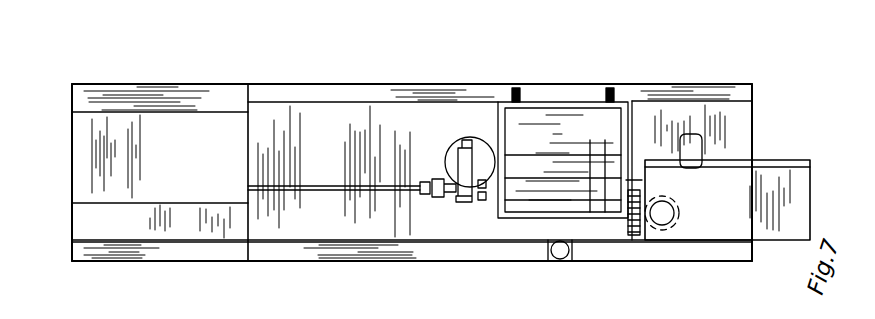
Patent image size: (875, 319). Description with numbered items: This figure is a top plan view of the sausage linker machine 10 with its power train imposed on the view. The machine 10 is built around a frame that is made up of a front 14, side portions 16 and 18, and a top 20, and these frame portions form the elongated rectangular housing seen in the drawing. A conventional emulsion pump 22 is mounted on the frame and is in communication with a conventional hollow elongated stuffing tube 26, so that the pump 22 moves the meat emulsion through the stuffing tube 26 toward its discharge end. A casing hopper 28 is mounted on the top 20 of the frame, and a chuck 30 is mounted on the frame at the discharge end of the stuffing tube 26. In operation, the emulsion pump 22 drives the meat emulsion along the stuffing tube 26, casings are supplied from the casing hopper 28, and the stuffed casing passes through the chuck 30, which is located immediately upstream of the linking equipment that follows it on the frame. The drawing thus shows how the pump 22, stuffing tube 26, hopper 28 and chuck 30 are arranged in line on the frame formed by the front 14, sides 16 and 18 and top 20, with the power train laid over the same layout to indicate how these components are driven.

The sausage linker machine 10 is at (340, 78).
The front 14 is at (332, 262).
The frame portion 16 is at (72, 97).
The frame portion 18 is at (754, 118).
The top 20 is at (143, 106).
The emulsion pump 22 is at (456, 146).
The stuffing tube 26 is at (350, 192).
The casing hopper 28 is at (497, 95).
The chuck 30 is at (632, 242).